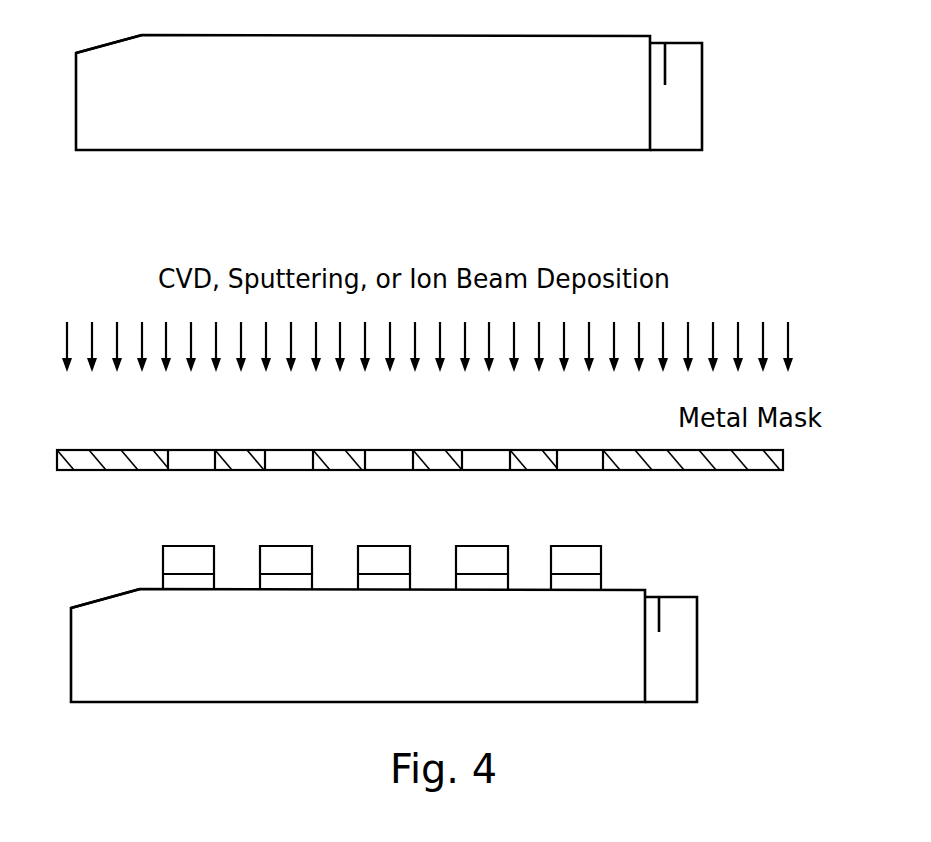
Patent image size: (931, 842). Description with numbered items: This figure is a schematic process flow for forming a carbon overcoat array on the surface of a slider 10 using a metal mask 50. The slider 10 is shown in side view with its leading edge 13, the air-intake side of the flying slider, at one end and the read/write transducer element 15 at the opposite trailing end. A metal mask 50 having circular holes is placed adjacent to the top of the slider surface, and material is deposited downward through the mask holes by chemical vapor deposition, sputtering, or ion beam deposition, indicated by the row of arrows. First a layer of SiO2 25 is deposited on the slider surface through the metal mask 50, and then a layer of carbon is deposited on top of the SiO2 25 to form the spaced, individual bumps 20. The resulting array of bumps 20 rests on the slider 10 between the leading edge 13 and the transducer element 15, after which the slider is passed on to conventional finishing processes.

The slider 10 is at (360, 368).
The leading edge 13 is at (104, 49).
The read/write transducer element 15 is at (674, 372).
The bumps 20 is at (587, 562).
The SiO2 layer 25 is at (592, 582).
The metal mask 50 is at (420, 431).